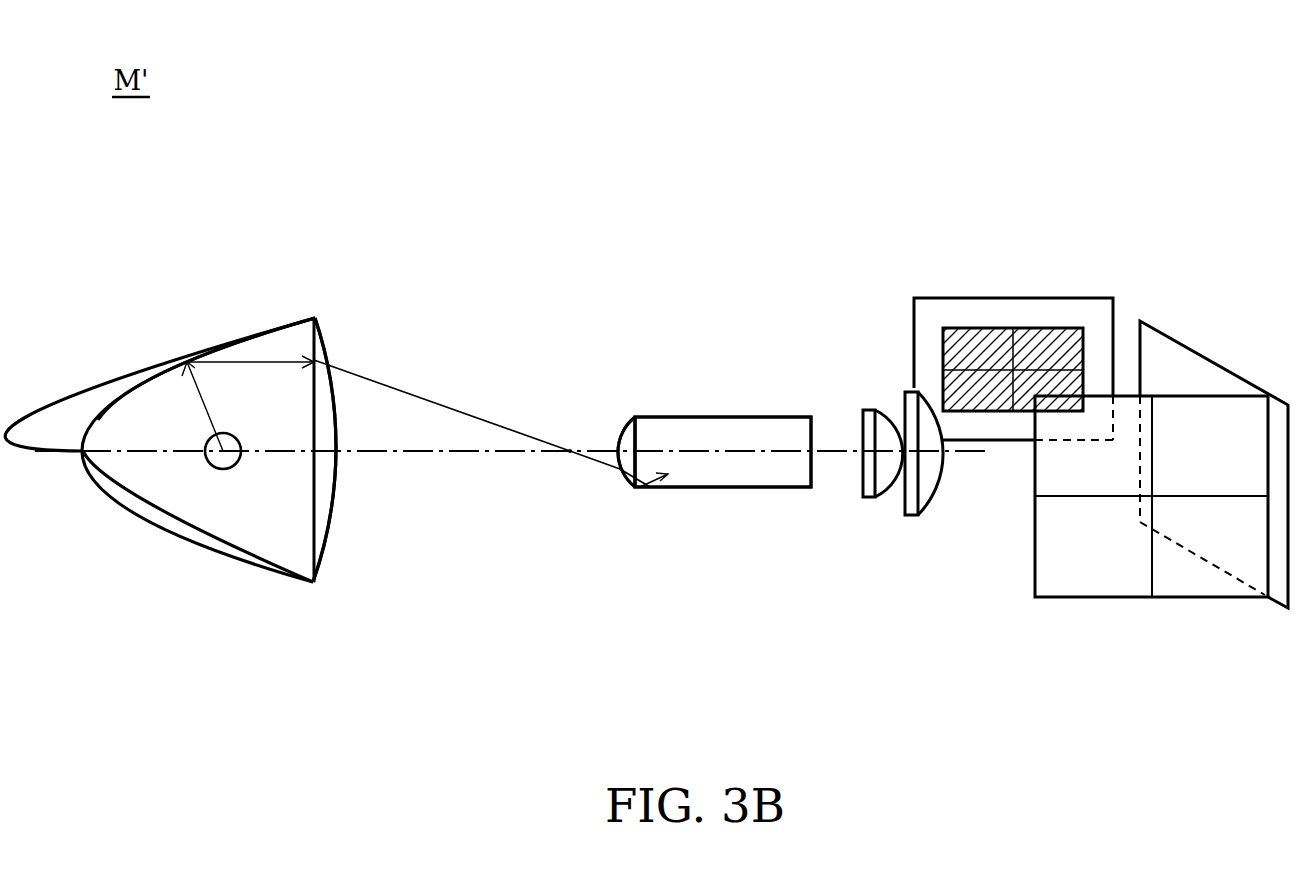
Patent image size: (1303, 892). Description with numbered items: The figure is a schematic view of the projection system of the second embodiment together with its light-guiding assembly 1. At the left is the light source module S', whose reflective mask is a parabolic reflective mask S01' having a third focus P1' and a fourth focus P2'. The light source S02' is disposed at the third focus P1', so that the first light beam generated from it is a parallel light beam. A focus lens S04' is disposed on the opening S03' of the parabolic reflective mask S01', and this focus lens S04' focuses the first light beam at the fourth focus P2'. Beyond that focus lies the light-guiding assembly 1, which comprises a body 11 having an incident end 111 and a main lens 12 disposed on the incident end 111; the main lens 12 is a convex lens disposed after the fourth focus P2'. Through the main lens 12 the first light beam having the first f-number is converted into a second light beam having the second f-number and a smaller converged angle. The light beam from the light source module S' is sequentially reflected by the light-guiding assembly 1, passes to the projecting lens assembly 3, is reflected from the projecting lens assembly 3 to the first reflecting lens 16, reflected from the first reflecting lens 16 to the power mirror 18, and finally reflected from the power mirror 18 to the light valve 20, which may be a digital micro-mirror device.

The light source module S' is at (209, 379).
The parabolic reflective mask S01' is at (206, 324).
The light source S02' is at (160, 339).
The opening S03' is at (198, 553).
The focus lens S04' is at (370, 451).
The third focus P1' is at (234, 527).
The fourth focus P2' is at (542, 488).
The light-guiding assembly 1 is at (728, 405).
The body 11 is at (720, 493).
The incident end 111 is at (637, 437).
The main lens 12 is at (621, 489).
The projecting lens assembly 3 is at (872, 505).
The light valve 20 is at (1012, 298).
The power mirror 18 is at (1103, 598).
The first reflecting lens 16 is at (1229, 371).